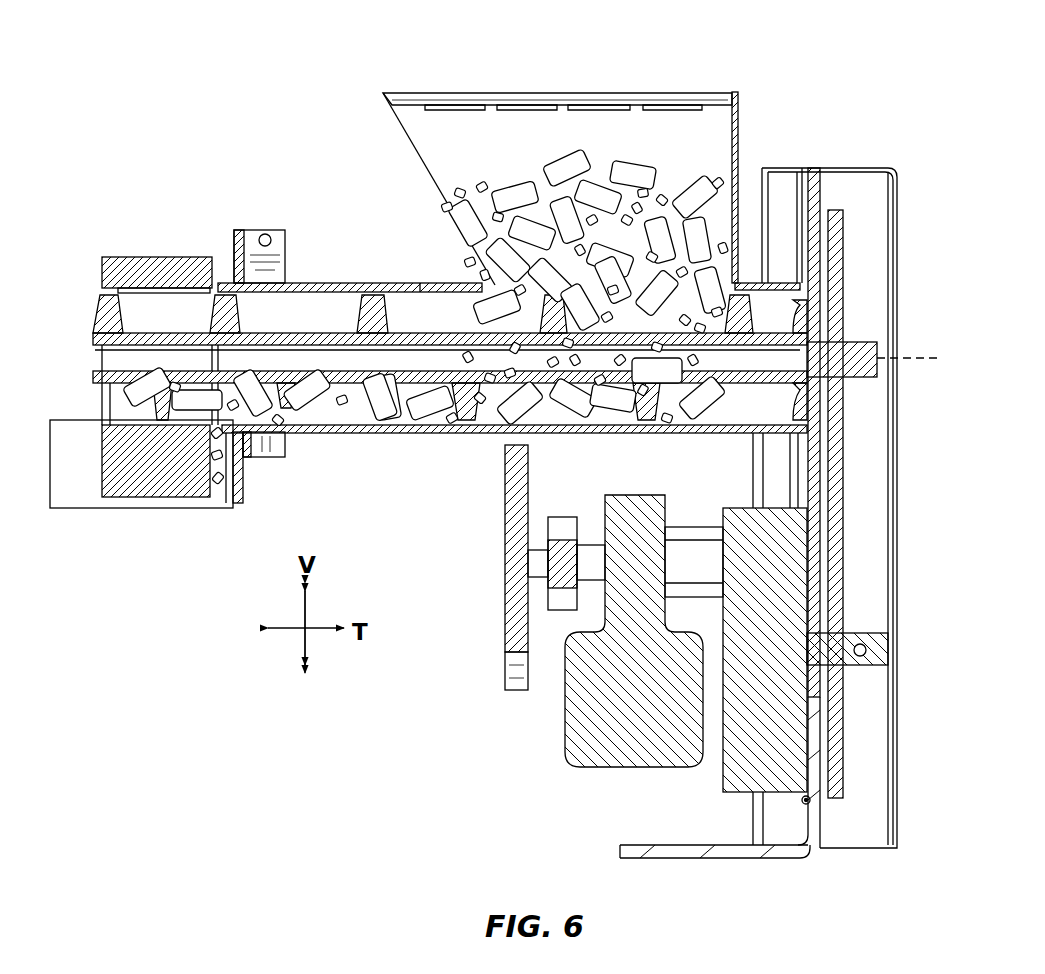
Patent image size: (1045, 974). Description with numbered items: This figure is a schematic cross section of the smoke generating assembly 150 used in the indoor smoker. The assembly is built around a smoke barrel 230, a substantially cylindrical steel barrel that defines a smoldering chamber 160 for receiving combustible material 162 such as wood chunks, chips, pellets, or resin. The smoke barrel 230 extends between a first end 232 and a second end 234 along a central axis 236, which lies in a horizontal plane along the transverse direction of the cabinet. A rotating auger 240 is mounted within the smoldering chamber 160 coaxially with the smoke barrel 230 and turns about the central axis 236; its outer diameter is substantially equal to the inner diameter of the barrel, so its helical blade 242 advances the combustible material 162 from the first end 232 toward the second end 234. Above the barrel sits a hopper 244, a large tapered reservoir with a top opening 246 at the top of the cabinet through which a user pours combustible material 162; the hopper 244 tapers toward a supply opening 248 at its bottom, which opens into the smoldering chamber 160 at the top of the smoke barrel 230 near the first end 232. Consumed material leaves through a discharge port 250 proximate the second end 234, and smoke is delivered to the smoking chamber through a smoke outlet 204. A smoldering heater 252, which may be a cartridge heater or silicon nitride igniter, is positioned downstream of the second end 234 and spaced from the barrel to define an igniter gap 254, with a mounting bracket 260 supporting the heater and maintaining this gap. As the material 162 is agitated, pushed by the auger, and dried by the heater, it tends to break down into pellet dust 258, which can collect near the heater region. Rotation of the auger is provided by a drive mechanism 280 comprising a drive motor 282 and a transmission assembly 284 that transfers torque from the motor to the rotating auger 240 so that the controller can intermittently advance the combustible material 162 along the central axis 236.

The smoke generating assembly 150 is at (303, 145).
The smoldering chamber 160 is at (303, 298).
The combustible material 162 is at (620, 170).
The smoke outlet 204 is at (88, 296).
The smoke barrel 230 is at (420, 288).
The first end 232 is at (784, 280).
The second end 234 is at (225, 274).
The central axis 236 is at (913, 358).
The rotating auger 240 is at (140, 340).
The helical blade 242 is at (370, 296).
The hopper 244 is at (410, 145).
The top opening 246 is at (553, 90).
The supply opening 248 is at (692, 295).
The discharge port 250 is at (76, 322).
The smoldering heater 252 is at (133, 485).
The igniter gap 254 is at (228, 467).
The pellet dust 258 is at (222, 483).
The mounting bracket 260 is at (238, 230).
The drive mechanism 280 is at (468, 714).
The drive motor 282 is at (600, 735).
The transmission assembly 284 is at (840, 545).